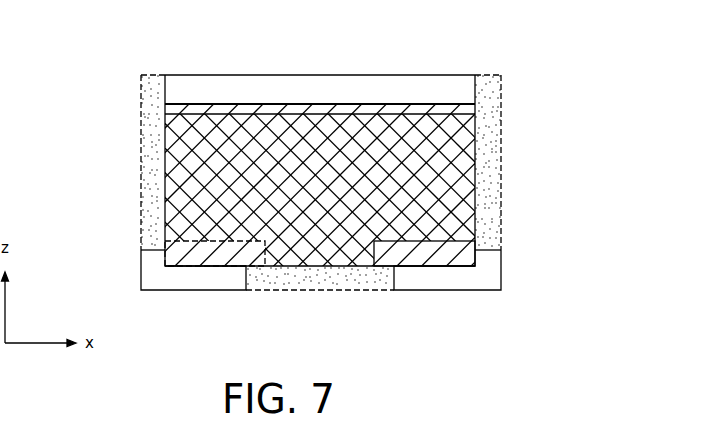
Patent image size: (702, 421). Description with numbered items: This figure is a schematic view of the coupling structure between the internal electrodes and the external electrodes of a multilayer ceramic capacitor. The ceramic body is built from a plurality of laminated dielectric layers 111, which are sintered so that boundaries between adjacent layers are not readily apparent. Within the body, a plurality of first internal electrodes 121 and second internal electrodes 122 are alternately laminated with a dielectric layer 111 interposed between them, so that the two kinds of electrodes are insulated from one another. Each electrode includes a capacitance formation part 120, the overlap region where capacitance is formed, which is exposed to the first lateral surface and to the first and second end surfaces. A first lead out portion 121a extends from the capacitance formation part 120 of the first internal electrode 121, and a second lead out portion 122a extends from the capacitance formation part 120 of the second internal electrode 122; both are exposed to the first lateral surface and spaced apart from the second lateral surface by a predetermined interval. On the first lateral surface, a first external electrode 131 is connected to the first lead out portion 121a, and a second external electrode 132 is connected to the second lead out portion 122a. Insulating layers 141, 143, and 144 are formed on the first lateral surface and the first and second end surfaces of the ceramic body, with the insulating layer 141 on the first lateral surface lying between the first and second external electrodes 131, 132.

The dielectric layer 111 is at (323, 90).
The capacitance formation part 120 is at (468, 163).
The first internal electrode 121 is at (180, 170).
The second internal electrode 122 is at (392, 103).
The first lead out portion 121a is at (177, 245).
The second lead out portion 122a is at (462, 252).
The first external electrode 131 is at (198, 272).
The second external electrode 132 is at (442, 272).
The insulating layer 141 is at (320, 272).
The insulating layer 143 is at (153, 128).
The insulating layer 144 is at (487, 128).